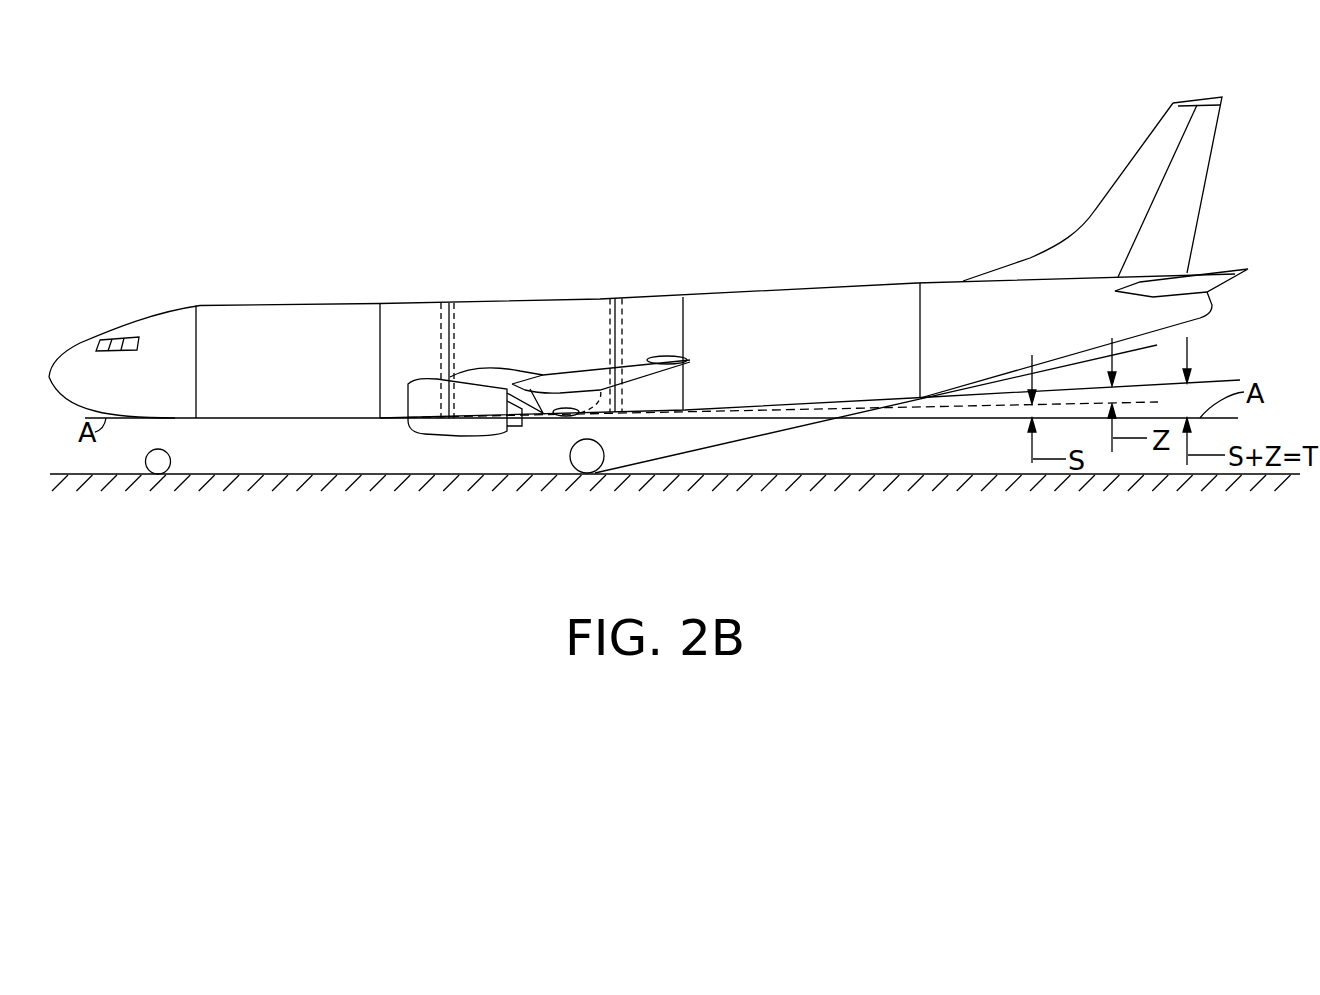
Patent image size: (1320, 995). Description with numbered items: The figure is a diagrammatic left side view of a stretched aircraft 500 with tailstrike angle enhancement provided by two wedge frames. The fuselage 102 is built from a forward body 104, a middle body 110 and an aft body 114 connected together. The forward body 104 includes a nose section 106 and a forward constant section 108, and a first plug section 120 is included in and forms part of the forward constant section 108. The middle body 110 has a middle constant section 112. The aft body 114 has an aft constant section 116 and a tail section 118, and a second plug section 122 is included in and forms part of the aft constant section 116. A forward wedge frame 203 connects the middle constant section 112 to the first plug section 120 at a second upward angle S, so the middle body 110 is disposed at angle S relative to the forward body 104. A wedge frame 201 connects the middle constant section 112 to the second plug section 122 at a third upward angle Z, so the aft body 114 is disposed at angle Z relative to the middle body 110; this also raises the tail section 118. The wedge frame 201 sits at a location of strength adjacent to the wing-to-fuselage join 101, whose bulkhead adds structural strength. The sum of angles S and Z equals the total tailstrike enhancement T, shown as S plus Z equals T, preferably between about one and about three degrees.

The aircraft 500 is at (355, 113).
The fuselage 102 is at (528, 224).
The forward body 104 is at (340, 289).
The nose section 106 is at (85, 363).
The forward constant section 108 is at (232, 330).
The middle body 110 is at (540, 300).
The middle constant section 112 is at (478, 308).
The aft body 114 is at (836, 282).
The aft constant section 116 is at (738, 315).
The tail section 118 is at (943, 302).
The first plug section 120 is at (423, 307).
The second plug section 122 is at (636, 307).
The wedge frame 201 is at (613, 300).
The forward wedge frame 203 is at (448, 305).
The wing-to-fuselage join 101 is at (553, 414).